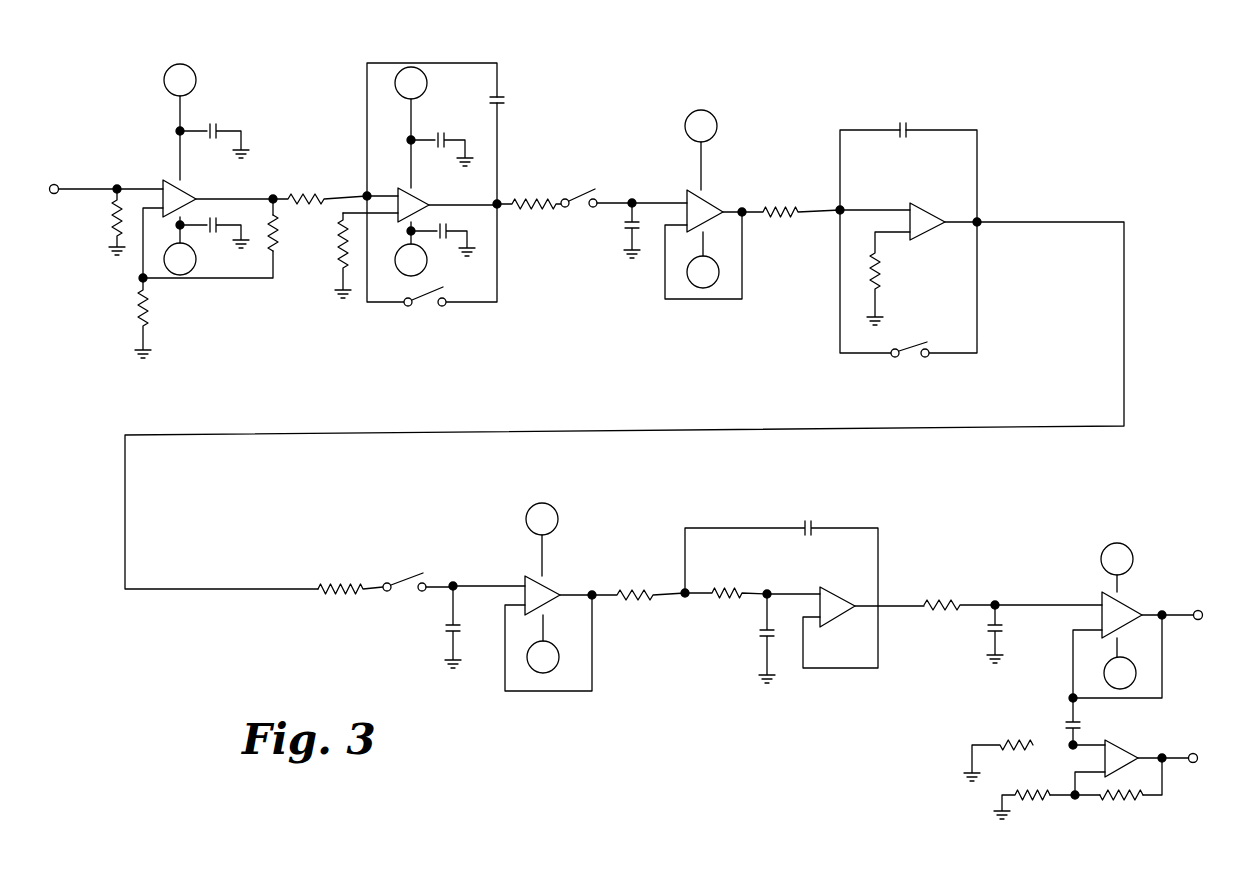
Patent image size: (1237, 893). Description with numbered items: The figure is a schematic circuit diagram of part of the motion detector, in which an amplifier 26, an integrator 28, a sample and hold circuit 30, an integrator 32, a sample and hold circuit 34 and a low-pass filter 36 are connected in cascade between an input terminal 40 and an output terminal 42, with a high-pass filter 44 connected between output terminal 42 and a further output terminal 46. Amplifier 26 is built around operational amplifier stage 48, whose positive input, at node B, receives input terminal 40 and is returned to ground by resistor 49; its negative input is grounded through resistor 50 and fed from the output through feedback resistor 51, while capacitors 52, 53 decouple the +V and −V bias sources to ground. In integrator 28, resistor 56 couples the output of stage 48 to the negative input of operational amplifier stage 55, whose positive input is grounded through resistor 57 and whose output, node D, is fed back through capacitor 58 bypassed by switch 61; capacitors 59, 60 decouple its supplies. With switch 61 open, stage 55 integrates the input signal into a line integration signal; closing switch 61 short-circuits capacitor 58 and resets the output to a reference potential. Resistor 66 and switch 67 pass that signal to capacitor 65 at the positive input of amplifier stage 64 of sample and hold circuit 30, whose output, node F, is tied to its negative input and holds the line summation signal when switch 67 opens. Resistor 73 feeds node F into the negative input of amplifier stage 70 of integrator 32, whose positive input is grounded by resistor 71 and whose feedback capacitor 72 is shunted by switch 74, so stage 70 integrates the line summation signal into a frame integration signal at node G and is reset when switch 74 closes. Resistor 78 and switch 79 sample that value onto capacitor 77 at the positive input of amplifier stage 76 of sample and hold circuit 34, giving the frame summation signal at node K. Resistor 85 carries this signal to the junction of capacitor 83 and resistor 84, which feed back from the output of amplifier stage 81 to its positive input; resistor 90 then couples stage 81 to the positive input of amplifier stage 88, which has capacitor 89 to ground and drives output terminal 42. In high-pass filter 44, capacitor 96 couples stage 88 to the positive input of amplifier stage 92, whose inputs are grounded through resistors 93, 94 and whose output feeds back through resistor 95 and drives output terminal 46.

The amplifier 26 is at (205, 105).
The input terminal 40 is at (58, 185).
The node B is at (117, 185).
The operational amplifier stage 48 is at (166, 182).
The resistor 49 is at (112, 215).
The resistor 50 is at (148, 310).
The feedback resistor 51 is at (278, 236).
The capacitor 52 is at (213, 122).
The capacitor 53 is at (215, 216).
The resistor 56 is at (312, 194).
The resistor 57 is at (340, 250).
The integrator 28 is at (500, 86).
The operational amplifier stage 55 is at (420, 196).
The feedback capacitor 58 is at (512, 100).
The capacitor 59 is at (441, 134).
The capacitor 60 is at (447, 226).
The switch 61 is at (424, 306).
The node D is at (501, 209).
The resistor 66 is at (544, 196).
The switch 67 is at (582, 194).
The capacitor 65 is at (627, 228).
The sample and hold circuit 30 is at (727, 124).
The amplifier stage 64 is at (690, 192).
The node F is at (744, 207).
The resistor 73 is at (776, 203).
The integrator 32 is at (986, 131).
The amplifier stage 70 is at (922, 205).
The resistor 71 is at (880, 276).
The feedback capacitor 72 is at (910, 122).
The switch 74 is at (905, 358).
The node G is at (980, 220).
The resistor 78 is at (340, 582).
The switch 79 is at (408, 580).
The capacitor 77 is at (446, 626).
The sample and hold circuit 34 is at (553, 558).
The amplifier stage 76 is at (542, 584).
The node K is at (596, 590).
The resistor 85 is at (632, 600).
The resistor 84 is at (722, 592).
The capacitor 83 is at (808, 520).
The amplifier stage 81 is at (834, 592).
The output amplifier stage 36 is at (1038, 566).
The resistor 90 is at (950, 602).
The capacitor 89 is at (988, 627).
The amplifier stage 88 is at (1100, 594).
The output terminal 42 is at (1200, 610).
The high-pass filter 44 is at (1131, 741).
The capacitor 96 is at (1083, 724).
The resistor 93 is at (1012, 745).
The amplifier stage 92 is at (1130, 750).
The resistor 94 is at (1035, 800).
The resistor 95 is at (1124, 801).
The output terminal 46 is at (1192, 764).